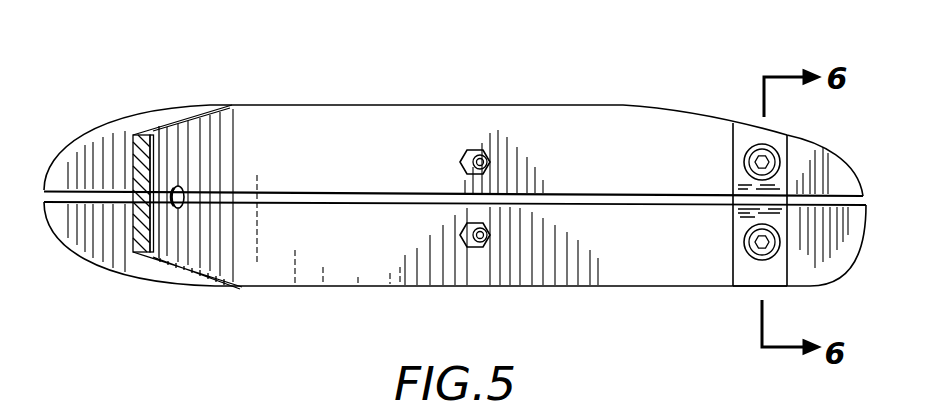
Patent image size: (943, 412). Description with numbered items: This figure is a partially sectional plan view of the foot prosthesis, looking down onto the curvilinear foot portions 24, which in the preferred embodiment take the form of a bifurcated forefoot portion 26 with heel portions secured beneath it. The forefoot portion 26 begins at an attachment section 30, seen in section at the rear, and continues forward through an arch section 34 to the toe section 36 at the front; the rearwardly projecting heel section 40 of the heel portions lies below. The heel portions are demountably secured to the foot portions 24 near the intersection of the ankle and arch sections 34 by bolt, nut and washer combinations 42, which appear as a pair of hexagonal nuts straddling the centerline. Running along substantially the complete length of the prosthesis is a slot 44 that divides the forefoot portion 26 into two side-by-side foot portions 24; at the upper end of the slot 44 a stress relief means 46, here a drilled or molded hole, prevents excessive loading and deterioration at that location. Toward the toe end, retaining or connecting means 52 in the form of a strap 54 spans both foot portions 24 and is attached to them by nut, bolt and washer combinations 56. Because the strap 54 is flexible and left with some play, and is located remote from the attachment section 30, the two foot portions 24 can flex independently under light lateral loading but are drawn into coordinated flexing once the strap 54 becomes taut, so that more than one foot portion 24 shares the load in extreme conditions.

The curvilinear foot portions 24 is at (293, 98).
The forefoot portion 26 is at (220, 145).
The attachment section 30 is at (150, 132).
The arch section 34 is at (448, 125).
The toe section 36 is at (842, 178).
The heel section 40 is at (88, 142).
The bolt, nut and washer combinations 42 is at (478, 152).
The slot 44 is at (402, 196).
The stress relief means 46 is at (181, 206).
The retaining or connecting means 52 is at (714, 107).
The strap 54 is at (740, 258).
The nut, bolt and washer combinations 56 is at (769, 156).